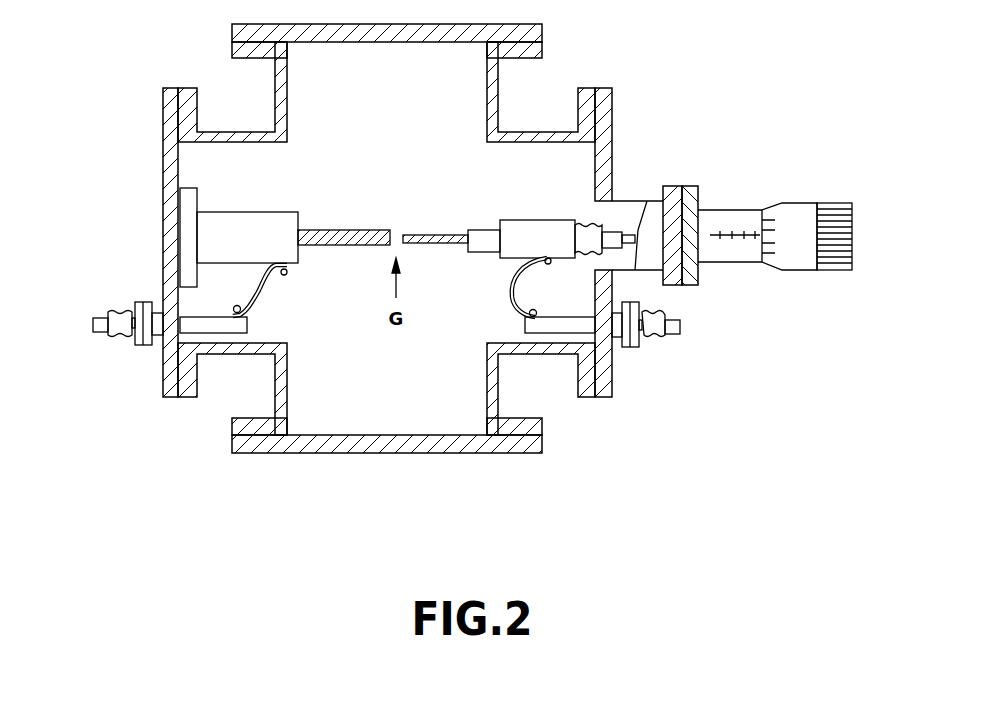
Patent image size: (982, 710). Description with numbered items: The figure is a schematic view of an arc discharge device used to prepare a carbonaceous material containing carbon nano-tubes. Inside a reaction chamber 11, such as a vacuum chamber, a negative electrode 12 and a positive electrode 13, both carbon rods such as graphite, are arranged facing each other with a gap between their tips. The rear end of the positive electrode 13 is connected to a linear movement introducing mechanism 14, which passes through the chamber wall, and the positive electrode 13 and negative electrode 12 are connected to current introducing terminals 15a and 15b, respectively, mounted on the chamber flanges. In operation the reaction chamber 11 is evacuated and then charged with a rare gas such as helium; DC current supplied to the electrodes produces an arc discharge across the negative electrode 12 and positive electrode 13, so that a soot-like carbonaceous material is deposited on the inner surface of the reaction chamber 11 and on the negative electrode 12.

The reaction chamber 11 is at (195, 167).
The negative electrode 12 is at (320, 228).
The positive electrode 13 is at (422, 228).
The linear movement introducing mechanism 14 is at (827, 270).
The current introducing terminal 15a is at (680, 327).
The current introducing terminal 15b is at (93, 324).